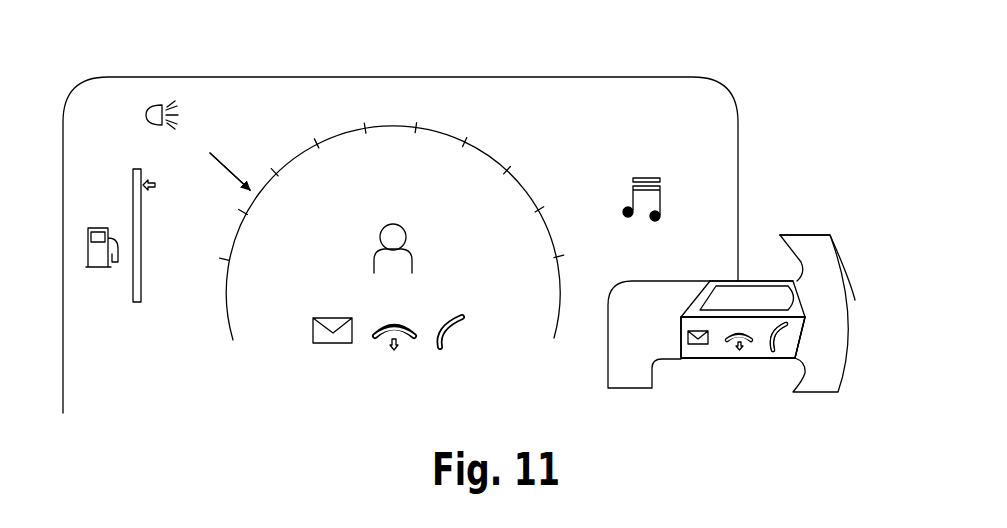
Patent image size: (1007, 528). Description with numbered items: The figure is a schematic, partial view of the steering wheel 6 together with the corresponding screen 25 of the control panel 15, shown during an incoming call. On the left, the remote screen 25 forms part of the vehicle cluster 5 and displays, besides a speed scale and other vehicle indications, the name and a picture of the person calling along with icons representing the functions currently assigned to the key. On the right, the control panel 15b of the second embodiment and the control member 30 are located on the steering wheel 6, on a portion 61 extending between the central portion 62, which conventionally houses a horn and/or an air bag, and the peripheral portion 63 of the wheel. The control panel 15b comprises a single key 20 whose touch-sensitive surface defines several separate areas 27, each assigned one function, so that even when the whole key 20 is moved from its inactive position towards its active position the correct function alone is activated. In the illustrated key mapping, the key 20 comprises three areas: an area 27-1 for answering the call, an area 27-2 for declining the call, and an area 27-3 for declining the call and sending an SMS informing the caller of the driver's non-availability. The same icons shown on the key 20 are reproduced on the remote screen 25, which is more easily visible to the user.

The cluster 5 is at (205, 107).
The screen 25 is at (430, 183).
The steering wheel 6 is at (852, 262).
The portion 61 is at (755, 278).
The central portion 62 is at (657, 330).
The peripheral portion 63 is at (812, 250).
The control member 30 is at (776, 297).
The key 20 is at (792, 343).
The control panel 15 is at (672, 342).
The control panel 15b is at (743, 337).
The area 27 is at (786, 353).
The area for answering the call 27-1 is at (779, 337).
The area for declining the call 27-2 is at (750, 350).
The area for declining the call and sending a SMS 27-3 is at (698, 346).